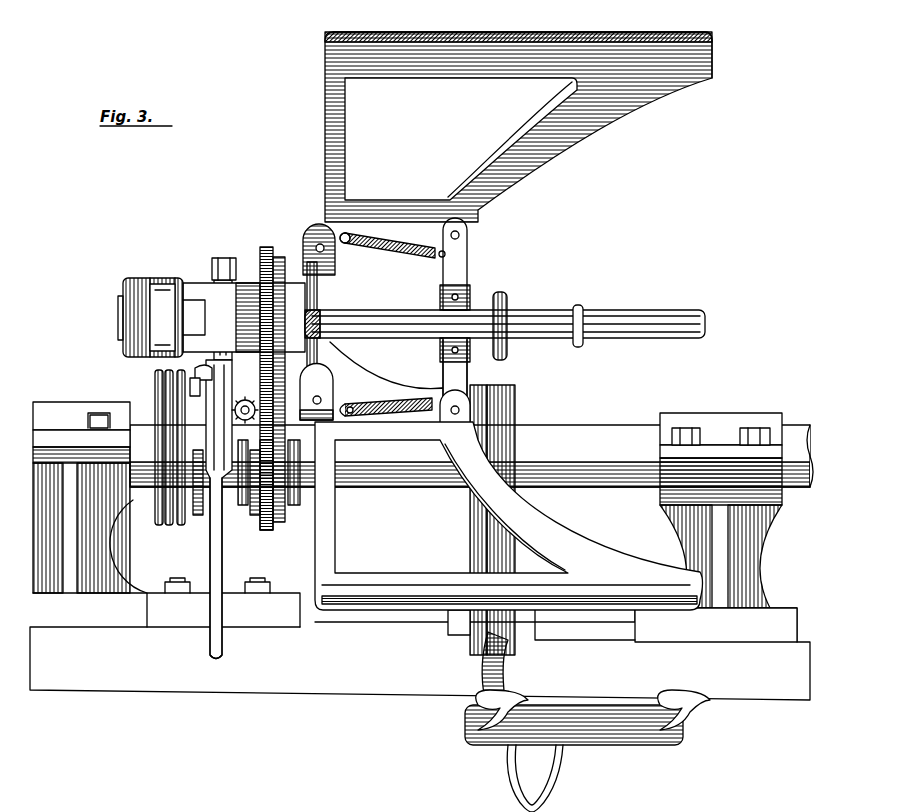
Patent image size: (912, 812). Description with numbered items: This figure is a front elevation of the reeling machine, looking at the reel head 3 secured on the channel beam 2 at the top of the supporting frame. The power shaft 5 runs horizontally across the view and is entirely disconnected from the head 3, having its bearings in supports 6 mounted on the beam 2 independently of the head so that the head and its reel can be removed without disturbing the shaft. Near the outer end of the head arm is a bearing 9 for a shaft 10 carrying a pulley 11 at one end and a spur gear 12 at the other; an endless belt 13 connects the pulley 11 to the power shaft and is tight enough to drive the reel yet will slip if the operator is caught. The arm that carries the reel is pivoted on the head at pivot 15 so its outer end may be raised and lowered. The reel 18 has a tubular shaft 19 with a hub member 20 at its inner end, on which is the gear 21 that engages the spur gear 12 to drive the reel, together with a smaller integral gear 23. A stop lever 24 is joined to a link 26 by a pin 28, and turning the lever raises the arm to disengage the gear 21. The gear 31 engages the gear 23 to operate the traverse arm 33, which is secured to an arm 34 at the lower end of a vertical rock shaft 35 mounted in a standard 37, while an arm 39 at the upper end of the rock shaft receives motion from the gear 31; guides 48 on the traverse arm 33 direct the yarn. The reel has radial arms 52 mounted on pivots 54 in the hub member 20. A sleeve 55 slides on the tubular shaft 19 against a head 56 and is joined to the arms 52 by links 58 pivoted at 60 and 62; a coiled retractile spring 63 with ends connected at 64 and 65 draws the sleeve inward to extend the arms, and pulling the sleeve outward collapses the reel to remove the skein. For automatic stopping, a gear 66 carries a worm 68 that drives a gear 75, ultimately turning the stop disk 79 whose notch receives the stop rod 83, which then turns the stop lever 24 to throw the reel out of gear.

The channel beam 2 is at (350, 683).
The head 3 is at (226, 572).
The power shaft 5 is at (590, 432).
The supports 6 is at (52, 410).
The bearing 9 is at (245, 431).
The shaft 10 is at (152, 470).
The pulley 11 is at (165, 508).
The spur gear 12 is at (275, 505).
The endless belt 13 is at (175, 518).
The pivot 15 is at (120, 312).
The reel 18 is at (522, 44).
The tubular shaft 19 is at (378, 312).
The hub member 20 is at (318, 292).
The gear 21 is at (278, 258).
The gear 23 is at (266, 305).
The stop lever 24 is at (224, 652).
The link 26 is at (217, 298).
The pin 28 is at (192, 387).
The gear 31 is at (266, 250).
The traverse arm 33 is at (563, 770).
The arm 34 is at (478, 665).
The rock shaft 35 is at (490, 527).
The standard 37 is at (478, 550).
The arm 39 is at (405, 374).
The guides 48 is at (485, 710).
The radial arms 52 is at (345, 136).
The pivots 54 is at (318, 228).
The sleeve 55 is at (506, 302).
The head 56 is at (582, 308).
The links 58 is at (468, 268).
The pivot 60 is at (470, 300).
The pivot 62 is at (460, 236).
The coiled retractile spring 63 is at (392, 250).
The spring end connection 64 is at (348, 246).
The spring end connection 65 is at (441, 258).
The gear 66 is at (257, 503).
The worm 68 is at (245, 508).
The gear 75 is at (303, 395).
The stop disk 79 is at (196, 518).
The stop rod 83 is at (200, 372).